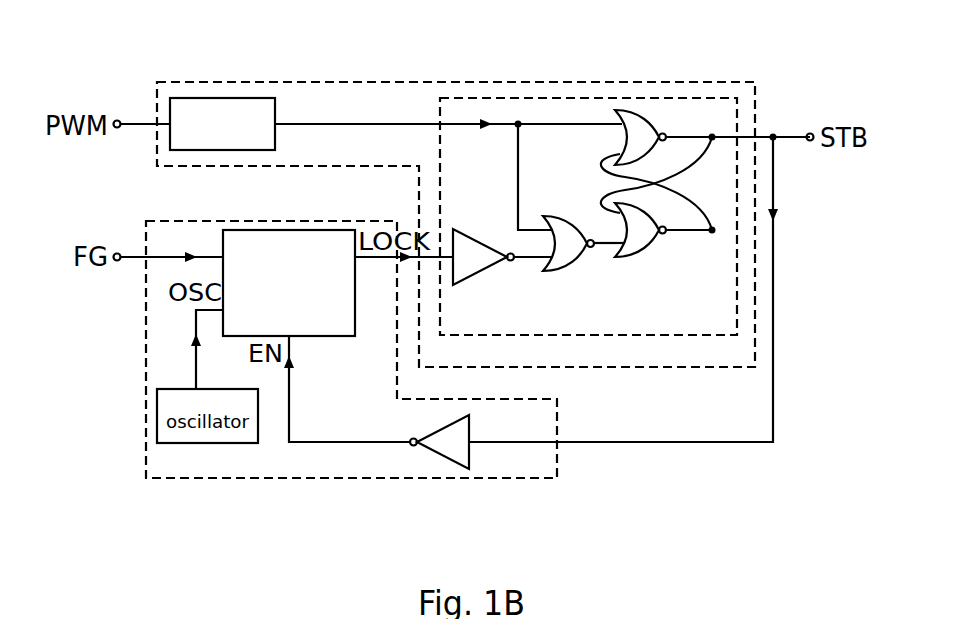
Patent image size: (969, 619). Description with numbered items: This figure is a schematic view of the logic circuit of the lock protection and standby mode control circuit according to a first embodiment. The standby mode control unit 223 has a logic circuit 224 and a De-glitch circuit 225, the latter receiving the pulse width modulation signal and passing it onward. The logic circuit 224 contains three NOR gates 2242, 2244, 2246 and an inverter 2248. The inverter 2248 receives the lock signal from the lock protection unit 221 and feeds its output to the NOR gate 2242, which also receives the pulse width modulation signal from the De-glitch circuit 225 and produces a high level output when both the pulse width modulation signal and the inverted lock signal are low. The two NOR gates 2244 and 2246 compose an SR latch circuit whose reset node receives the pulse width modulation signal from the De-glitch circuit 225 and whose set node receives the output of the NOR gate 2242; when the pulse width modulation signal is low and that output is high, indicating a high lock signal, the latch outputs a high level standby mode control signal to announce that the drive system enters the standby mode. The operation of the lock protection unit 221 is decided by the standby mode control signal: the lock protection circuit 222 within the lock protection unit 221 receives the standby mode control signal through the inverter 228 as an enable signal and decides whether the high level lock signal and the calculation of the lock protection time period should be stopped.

The lock protection unit 221 is at (146, 350).
The lock protection circuit 222 is at (302, 337).
The standby mode control unit 223 is at (240, 82).
The logic circuit 224 is at (463, 98).
The De-glitch circuit 225 is at (237, 150).
The inverter 228 is at (440, 454).
The NOR gate 2242 is at (590, 264).
The NOR gate 2244 is at (645, 98).
The NOR gate 2246 is at (656, 252).
The inverter 2248 is at (480, 278).